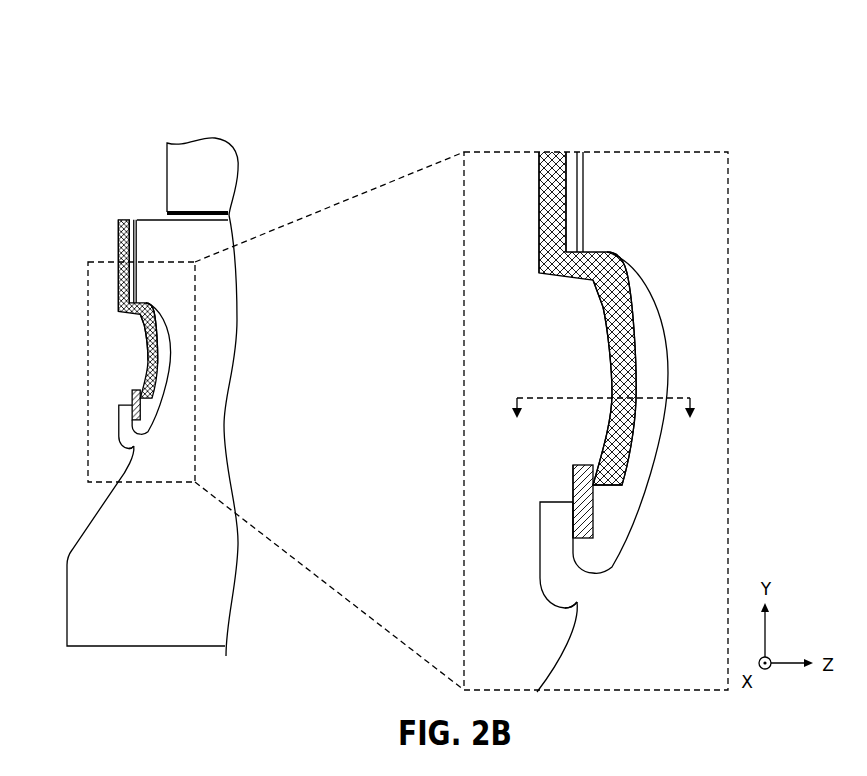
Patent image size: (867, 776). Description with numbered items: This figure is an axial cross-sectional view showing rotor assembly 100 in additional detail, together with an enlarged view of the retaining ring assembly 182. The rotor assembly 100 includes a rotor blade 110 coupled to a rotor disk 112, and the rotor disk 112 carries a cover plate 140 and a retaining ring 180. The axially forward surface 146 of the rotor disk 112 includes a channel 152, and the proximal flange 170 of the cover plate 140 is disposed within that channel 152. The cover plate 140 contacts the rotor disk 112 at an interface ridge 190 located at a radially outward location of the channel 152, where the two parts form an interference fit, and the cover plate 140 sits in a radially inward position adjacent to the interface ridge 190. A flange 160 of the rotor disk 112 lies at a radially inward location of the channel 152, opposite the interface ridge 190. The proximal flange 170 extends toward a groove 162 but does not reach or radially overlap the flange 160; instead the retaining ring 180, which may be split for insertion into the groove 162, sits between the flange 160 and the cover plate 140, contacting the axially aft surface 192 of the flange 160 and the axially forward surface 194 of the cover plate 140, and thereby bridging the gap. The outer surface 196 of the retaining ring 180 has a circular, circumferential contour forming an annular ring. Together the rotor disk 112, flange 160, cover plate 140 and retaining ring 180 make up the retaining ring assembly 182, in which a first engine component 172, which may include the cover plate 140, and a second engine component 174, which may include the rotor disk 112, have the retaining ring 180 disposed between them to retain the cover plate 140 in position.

The rotor assembly 100 is at (118, 62).
The rotor blade 110 is at (180, 172).
The rotor disk 112 is at (87, 567).
The cover plate 140 is at (103, 232).
The axially forward surface 146 is at (555, 668).
The channel 152 is at (668, 375).
The flange 160 is at (126, 428).
The groove 162 is at (594, 574).
The proximal flange 170 is at (627, 297).
The first engine component 172 is at (99, 286).
The second engine component 174 is at (97, 625).
The retaining ring 180 is at (141, 390).
The retaining ring assembly 182 is at (584, 379).
The interface ridge 190 is at (600, 249).
The axially aft surface 192 is at (572, 523).
The axially forward surface 194 is at (608, 443).
The outer surface 196 is at (572, 487).